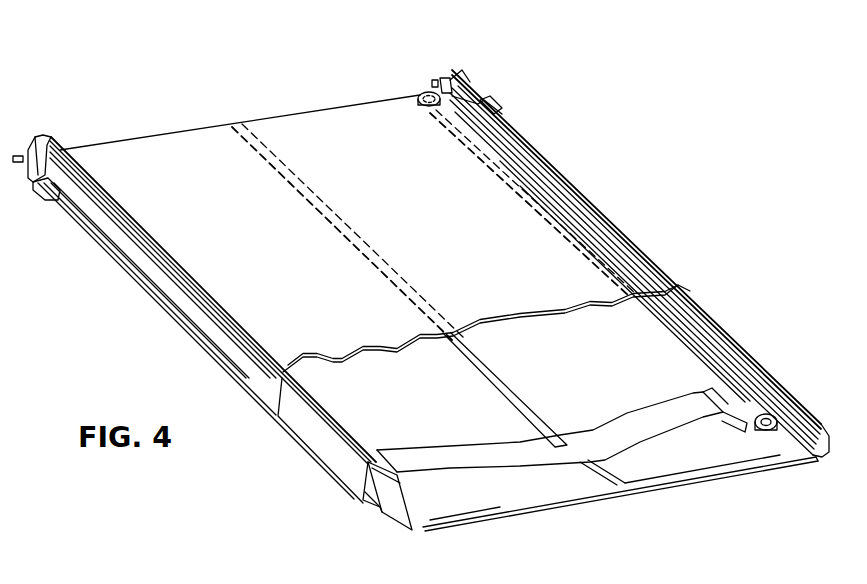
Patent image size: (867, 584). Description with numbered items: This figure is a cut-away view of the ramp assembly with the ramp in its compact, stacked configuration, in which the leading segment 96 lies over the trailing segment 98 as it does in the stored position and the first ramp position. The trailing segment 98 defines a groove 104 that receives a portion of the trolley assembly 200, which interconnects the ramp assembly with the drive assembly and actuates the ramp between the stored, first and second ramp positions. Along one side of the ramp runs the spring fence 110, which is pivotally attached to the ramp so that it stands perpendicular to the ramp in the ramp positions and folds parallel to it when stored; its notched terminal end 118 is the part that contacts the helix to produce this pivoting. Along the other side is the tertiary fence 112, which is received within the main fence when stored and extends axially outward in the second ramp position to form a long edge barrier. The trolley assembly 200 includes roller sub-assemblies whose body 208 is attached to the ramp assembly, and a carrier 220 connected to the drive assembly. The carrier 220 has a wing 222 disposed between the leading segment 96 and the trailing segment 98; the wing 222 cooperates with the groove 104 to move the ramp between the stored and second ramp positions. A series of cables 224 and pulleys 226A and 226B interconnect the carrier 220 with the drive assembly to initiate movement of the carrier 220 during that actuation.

The leading segment 96 is at (333, 132).
The trailing segment 98 is at (746, 447).
The groove 104 is at (513, 384).
The spring fence 110 is at (560, 180).
The tertiary fence 112 is at (383, 516).
The notched terminal end 118 is at (482, 100).
The trolley assembly 200 is at (694, 456).
The body 208 is at (443, 83).
The carrier 220 is at (510, 479).
The wing 222 is at (612, 441).
The cables 224 is at (696, 314).
The pulley 226A is at (770, 412).
The pulley 226B is at (429, 94).